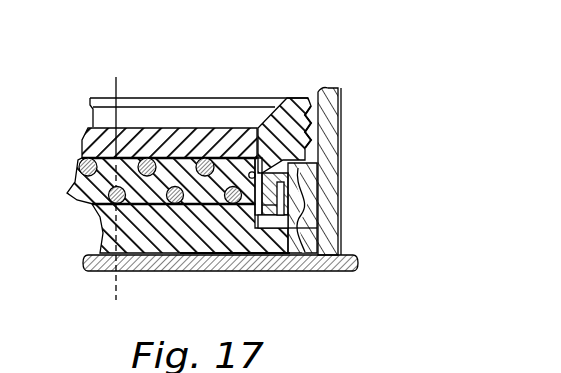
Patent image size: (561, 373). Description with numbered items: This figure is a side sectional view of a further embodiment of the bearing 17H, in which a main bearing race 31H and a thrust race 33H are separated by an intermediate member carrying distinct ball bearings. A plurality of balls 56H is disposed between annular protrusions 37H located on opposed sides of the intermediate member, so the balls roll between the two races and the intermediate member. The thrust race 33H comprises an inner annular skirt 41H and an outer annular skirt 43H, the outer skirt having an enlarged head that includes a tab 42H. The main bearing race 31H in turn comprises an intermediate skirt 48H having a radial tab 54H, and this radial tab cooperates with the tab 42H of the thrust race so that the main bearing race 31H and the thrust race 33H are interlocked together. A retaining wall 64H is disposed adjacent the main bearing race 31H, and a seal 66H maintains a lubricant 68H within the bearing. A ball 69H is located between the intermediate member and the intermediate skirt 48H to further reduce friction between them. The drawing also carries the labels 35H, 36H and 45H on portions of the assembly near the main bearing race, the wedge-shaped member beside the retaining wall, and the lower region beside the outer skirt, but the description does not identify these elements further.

The bearing 17H is at (284, 44).
The top plate 35H is at (125, 117).
The main bearing race 31H is at (137, 137).
The annular protrusions 37H is at (168, 158).
The balls 56H is at (79, 166).
The thrust race 33H is at (127, 228).
The outer annular skirt 43H is at (298, 270).
The wedge member 36H is at (279, 117).
The seal 66H is at (312, 142).
The retaining wall 64H is at (331, 161).
The lubricant 68H is at (310, 167).
The ball 69H is at (250, 170).
The tab 42H is at (282, 200).
The lower insert 45H is at (295, 237).
The radial tab 54H is at (270, 272).
The intermediate skirt 48H is at (247, 272).
The inner annular skirt 41H is at (228, 272).